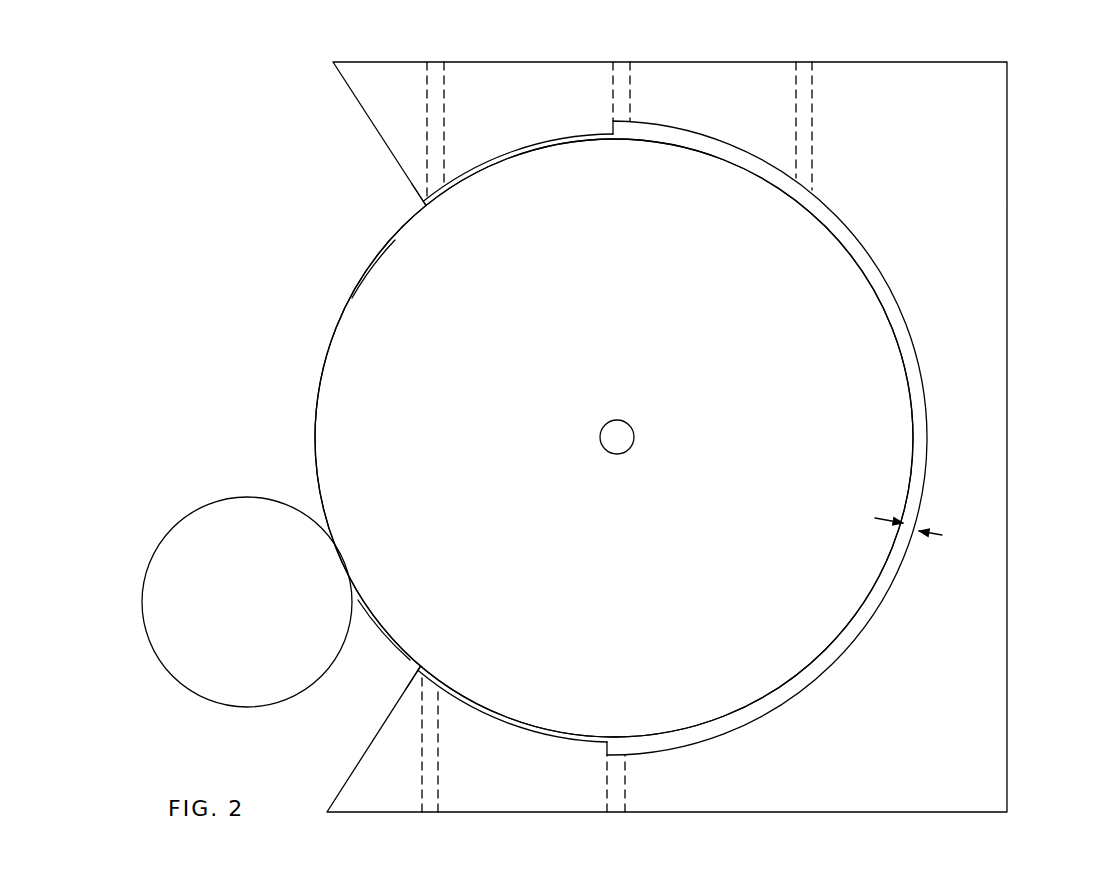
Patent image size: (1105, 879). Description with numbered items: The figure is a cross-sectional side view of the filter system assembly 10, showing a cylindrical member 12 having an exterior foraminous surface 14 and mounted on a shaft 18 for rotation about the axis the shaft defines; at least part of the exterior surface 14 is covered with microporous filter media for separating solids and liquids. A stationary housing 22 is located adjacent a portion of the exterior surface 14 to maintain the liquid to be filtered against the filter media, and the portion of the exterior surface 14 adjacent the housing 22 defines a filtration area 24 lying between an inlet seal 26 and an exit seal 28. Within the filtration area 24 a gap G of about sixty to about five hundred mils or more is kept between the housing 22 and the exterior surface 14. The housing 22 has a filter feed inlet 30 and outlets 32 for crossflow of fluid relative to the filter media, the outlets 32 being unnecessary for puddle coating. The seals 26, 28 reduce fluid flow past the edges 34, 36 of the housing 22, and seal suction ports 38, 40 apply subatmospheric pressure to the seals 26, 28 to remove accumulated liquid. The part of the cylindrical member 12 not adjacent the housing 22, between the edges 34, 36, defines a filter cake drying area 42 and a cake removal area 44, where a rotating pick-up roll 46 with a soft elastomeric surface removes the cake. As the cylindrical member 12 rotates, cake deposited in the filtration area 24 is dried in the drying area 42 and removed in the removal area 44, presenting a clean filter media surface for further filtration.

The filter system assembly 10 is at (256, 174).
The cylindrical member 12 is at (698, 387).
The exterior foraminous surface 14 is at (342, 308).
The shaft 18 is at (634, 440).
The stationary housing 22 is at (982, 239).
The filtration area 24 is at (922, 451).
The inlet seal 26 is at (551, 755).
The exit seal 28 is at (577, 120).
The filter feed inlet 30 is at (615, 806).
The outlet 32 is at (627, 66).
The edge of housing 34 is at (421, 666).
The edge of housing 36 is at (428, 209).
The seal suction port 38 is at (428, 806).
The seal suction port 40 is at (437, 66).
The filter cake drying area 42 is at (370, 264).
The cake removal area 44 is at (387, 632).
The rotating pick-up roll 46 is at (262, 617).
The gap G is at (921, 535).